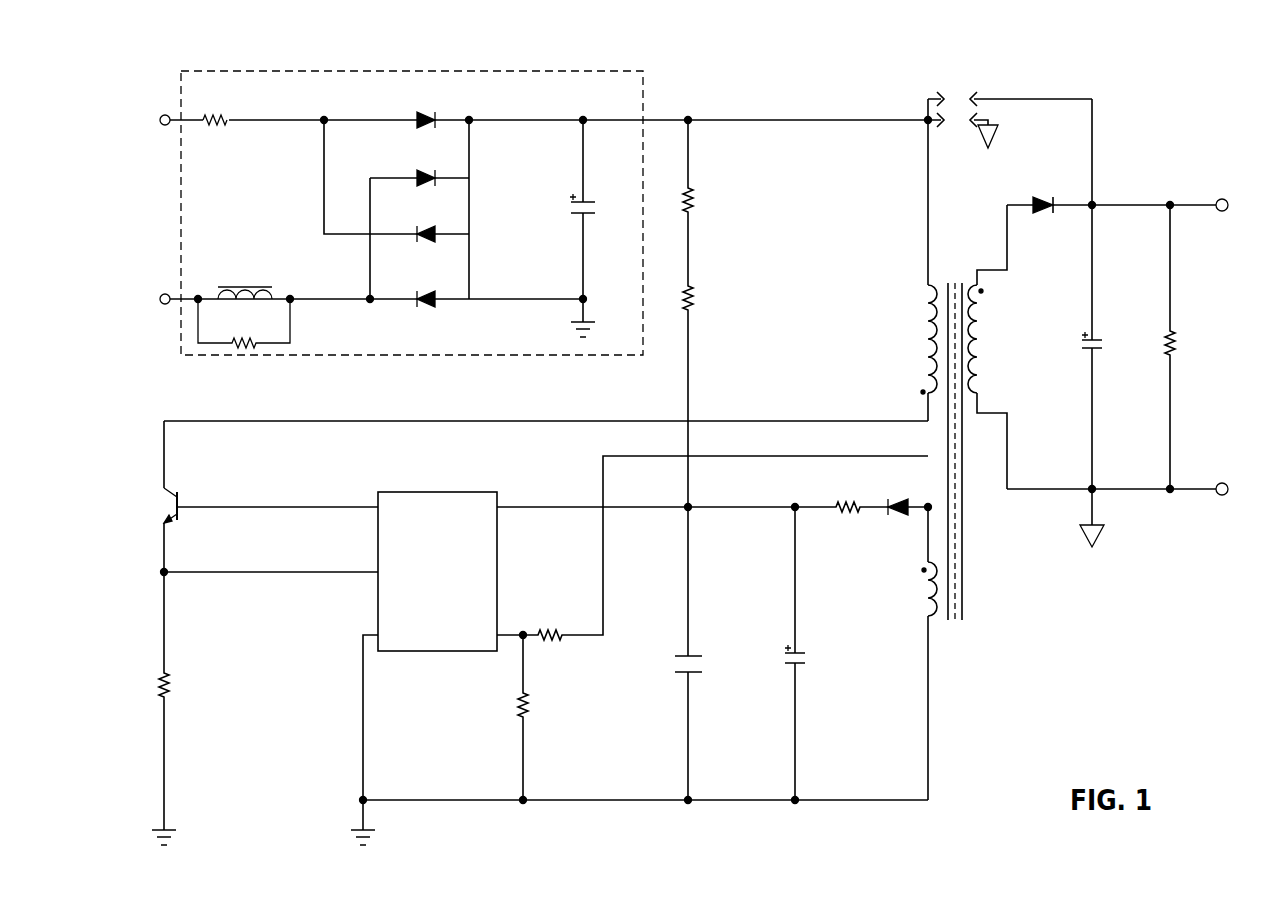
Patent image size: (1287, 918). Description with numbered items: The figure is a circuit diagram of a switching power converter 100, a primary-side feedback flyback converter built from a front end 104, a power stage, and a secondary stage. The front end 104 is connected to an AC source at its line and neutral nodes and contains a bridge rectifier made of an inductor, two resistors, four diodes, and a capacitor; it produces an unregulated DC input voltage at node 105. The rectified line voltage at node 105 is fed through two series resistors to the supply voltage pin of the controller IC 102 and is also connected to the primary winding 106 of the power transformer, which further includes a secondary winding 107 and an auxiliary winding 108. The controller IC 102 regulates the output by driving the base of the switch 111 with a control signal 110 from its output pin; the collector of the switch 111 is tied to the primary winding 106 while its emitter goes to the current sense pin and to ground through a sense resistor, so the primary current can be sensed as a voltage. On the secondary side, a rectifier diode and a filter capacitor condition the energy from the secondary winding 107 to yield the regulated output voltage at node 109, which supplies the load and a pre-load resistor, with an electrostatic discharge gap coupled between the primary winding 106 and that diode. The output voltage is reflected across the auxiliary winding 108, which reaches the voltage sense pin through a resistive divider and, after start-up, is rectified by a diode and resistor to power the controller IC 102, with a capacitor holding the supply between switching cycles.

The switching power converter 100 is at (697, 453).
The controller IC 102 is at (400, 492).
The front end 104 is at (644, 96).
The node 105 is at (690, 124).
The primary winding 106 is at (928, 300).
The secondary winding 107 is at (977, 312).
The auxiliary winding 108 is at (928, 597).
The node 109 is at (1170, 204).
The control signal 110 is at (257, 505).
The switch 111 is at (180, 520).